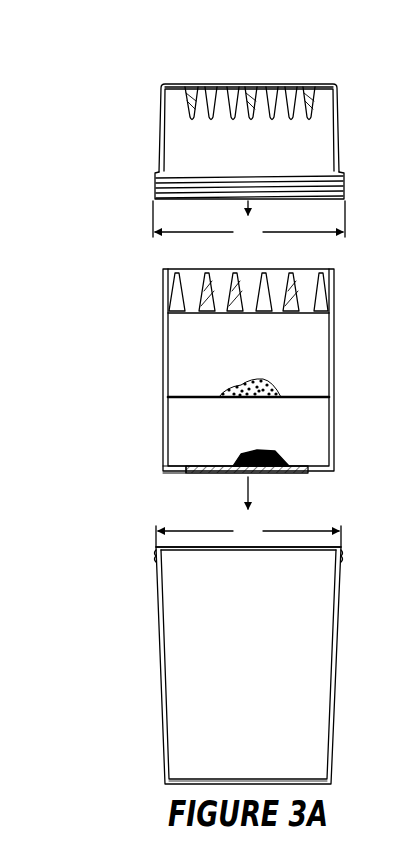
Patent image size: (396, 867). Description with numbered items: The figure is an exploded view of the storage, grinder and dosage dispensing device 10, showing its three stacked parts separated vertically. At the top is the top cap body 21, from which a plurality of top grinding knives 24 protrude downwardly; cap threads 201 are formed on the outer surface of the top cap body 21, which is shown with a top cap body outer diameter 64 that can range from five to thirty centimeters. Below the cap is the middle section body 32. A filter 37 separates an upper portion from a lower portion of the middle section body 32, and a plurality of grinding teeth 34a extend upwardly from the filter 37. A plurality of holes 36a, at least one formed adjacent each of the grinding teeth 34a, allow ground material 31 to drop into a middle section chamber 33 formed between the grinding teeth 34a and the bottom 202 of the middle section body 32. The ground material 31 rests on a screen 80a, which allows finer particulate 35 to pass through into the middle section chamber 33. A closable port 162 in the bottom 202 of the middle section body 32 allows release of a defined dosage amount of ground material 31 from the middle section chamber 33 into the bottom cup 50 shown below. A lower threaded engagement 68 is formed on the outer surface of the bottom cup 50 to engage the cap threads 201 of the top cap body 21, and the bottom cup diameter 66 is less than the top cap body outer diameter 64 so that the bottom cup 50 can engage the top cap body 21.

The storage, grinder and dosage dispensing device 10 is at (84, 110).
The top cap body 21 is at (338, 130).
The top grinding knives 24 is at (194, 120).
The cap threads 201 is at (160, 188).
The top cap body outer diameter 64 is at (249, 221).
The middle section body 32 is at (332, 373).
The grinding teeth 34a is at (193, 276).
The filter 37 is at (258, 313).
The holes 36a is at (181, 318).
The ground material 31 is at (263, 383).
The screen 80a is at (295, 394).
The middle section chamber 33 is at (184, 441).
The particulate 35 is at (268, 450).
The bottom 202 is at (180, 470).
The closable port 162 is at (283, 472).
The bottom cup diameter 66 is at (248, 534).
The bottom cup 50 is at (334, 670).
The lower threaded engagement 68 is at (341, 554).